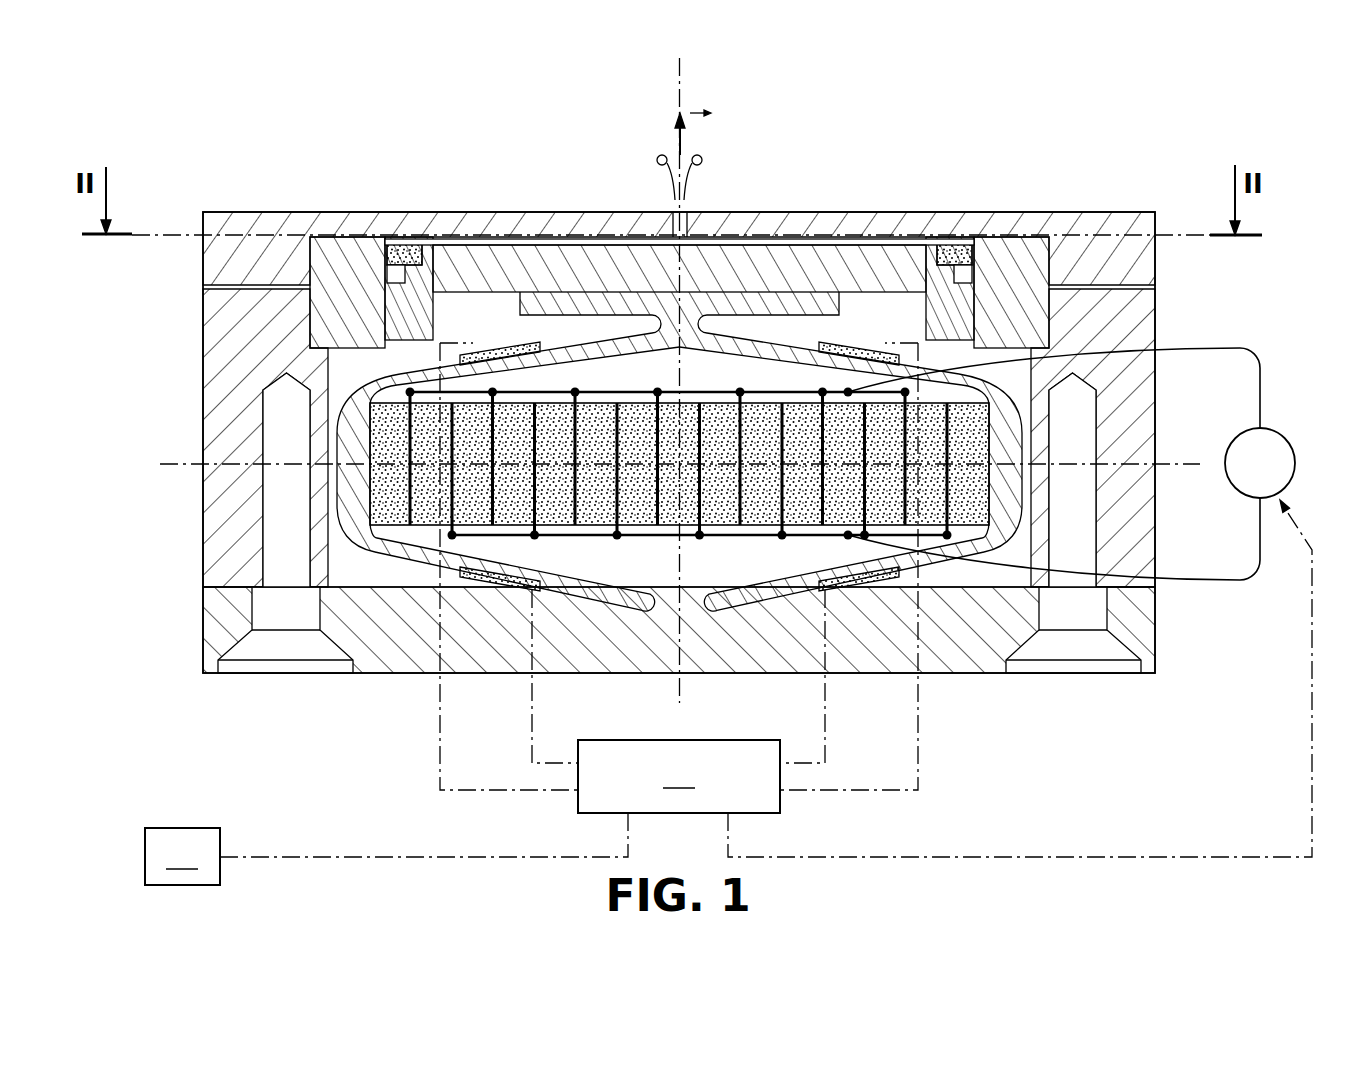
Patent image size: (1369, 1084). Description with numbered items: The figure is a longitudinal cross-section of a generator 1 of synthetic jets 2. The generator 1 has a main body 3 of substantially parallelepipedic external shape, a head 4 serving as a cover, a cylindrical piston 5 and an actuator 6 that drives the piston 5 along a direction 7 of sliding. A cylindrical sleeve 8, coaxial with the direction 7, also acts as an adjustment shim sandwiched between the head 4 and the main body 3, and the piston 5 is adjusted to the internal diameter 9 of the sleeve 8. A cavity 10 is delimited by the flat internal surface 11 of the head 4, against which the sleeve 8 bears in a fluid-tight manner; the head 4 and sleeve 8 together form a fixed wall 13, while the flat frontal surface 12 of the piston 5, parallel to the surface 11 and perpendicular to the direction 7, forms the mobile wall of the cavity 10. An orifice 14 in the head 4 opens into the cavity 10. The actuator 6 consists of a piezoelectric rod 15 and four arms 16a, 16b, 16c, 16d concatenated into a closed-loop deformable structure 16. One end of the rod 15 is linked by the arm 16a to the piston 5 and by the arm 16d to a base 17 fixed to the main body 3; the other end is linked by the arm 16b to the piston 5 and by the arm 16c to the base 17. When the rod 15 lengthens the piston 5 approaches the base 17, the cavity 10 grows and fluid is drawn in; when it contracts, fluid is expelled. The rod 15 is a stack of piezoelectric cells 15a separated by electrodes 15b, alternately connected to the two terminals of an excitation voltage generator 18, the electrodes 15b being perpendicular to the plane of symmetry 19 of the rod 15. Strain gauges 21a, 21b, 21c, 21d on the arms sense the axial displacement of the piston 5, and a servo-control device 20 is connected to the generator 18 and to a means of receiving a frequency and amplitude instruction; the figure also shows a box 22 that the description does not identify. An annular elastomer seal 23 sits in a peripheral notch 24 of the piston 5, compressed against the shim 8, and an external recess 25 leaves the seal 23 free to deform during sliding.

The generator of synthetic jets 1 is at (140, 334).
The synthetic jets 2 is at (677, 143).
The main body 3 is at (235, 398).
The head 4 is at (232, 268).
The cylindrical piston 5 is at (725, 268).
The actuator 6 is at (326, 517).
The direction of sliding 7 is at (688, 88).
The cylindrical sleeve 8 is at (327, 337).
The internal diameter of the sleeve 9 is at (392, 311).
The cavity 10 is at (437, 238).
The internal surface of the head 11 is at (465, 243).
The frontal surface of the piston 12 is at (543, 267).
The fixed wall 13 is at (157, 240).
The orifice 14 is at (673, 216).
The piezoelectric rod 15 is at (962, 452).
The piezoelectric cells 15a is at (423, 479).
The electrodes 15b is at (908, 497).
The deformable structure 16 is at (377, 560).
The arm 16a is at (598, 343).
The arm 16b is at (767, 342).
The arm 16c is at (772, 578).
The arm 16d is at (587, 578).
The base 17 is at (656, 645).
The excitation voltage generator 18 is at (1278, 427).
The plane of symmetry 19 is at (175, 463).
The servo-control device 20 is at (766, 600).
The strain gauge 21a is at (522, 343).
The strain gauge 21b is at (834, 343).
The strain gauge 21c is at (847, 590).
The strain gauge 21d is at (515, 588).
The controller 22 is at (182, 856).
The annular elastomer seal 23 is at (957, 248).
The peripheral notch 24 is at (944, 245).
The external recess 25 is at (977, 243).